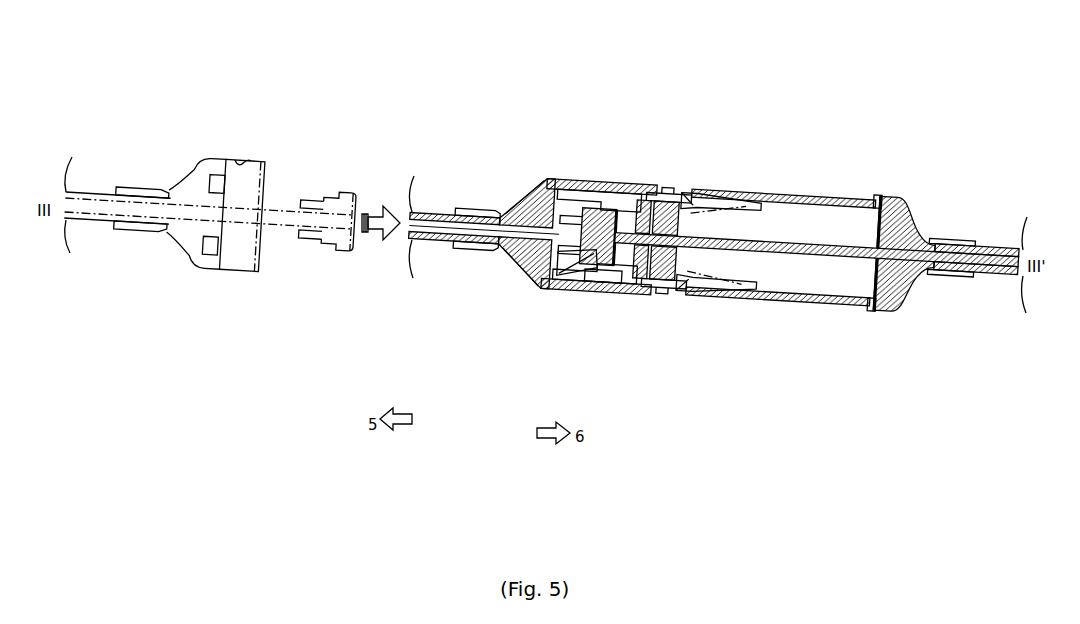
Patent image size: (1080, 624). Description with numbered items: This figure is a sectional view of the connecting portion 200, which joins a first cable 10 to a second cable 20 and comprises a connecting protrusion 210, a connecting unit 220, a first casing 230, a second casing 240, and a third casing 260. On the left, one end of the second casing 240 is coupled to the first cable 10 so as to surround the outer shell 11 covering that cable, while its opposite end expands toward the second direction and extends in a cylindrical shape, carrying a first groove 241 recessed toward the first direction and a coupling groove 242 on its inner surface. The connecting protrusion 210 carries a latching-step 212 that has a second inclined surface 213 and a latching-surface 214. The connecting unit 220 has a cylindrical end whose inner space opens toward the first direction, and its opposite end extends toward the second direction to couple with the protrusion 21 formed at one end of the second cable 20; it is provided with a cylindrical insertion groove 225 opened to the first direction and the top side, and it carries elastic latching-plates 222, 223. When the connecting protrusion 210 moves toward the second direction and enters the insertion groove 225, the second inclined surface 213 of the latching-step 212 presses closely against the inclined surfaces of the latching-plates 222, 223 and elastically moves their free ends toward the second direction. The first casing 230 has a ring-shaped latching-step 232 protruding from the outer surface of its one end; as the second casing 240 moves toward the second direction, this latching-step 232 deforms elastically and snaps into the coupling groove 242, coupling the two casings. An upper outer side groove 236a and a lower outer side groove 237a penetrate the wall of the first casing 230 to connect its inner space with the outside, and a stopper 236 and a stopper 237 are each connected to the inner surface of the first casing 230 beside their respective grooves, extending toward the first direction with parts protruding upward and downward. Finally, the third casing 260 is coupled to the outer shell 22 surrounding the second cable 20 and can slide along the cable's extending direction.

The connecting portion 200 is at (499, 90).
The first cable 10 is at (107, 210).
The outer shell 11 is at (87, 190).
The second cable 20 is at (736, 192).
The protrusion 21 is at (643, 194).
The outer shell 22 is at (950, 242).
The connecting protrusion 210 is at (435, 295).
The latching-step 212 is at (472, 288).
The second inclined surface 213 is at (350, 258).
The latching-surface 214 is at (320, 256).
The connecting unit 220 is at (576, 184).
The latching-plate 222 is at (590, 185).
The latching-plate 223 is at (548, 283).
The insertion groove 225 is at (547, 186).
The first casing 230 is at (717, 291).
The latching-step 232 is at (560, 292).
The stopper 236 is at (677, 193).
The outer side groove 236a is at (668, 190).
The stopper 237 is at (717, 276).
The outer side groove 237a is at (672, 292).
The second casing 240 is at (352, 238).
The first groove 241 is at (222, 265).
The coupling groove 242 is at (240, 163).
The third casing 260 is at (903, 215).